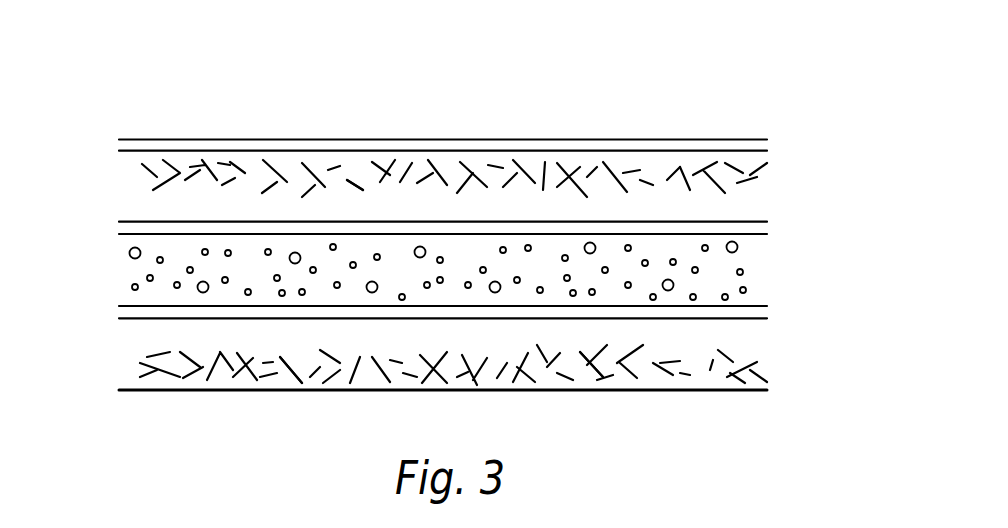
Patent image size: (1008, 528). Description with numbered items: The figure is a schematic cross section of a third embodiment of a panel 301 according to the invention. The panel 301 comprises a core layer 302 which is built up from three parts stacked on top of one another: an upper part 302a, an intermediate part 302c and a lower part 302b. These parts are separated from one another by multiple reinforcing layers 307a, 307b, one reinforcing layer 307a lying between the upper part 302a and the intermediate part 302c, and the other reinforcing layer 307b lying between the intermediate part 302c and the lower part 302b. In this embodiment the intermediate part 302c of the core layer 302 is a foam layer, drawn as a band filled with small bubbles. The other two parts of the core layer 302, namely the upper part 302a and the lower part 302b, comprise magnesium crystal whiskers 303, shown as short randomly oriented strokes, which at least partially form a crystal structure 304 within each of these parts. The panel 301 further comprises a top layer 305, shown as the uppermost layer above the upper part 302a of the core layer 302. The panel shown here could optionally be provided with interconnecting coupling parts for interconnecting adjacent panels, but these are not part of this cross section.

The panel 301 is at (117, 107).
The core layer 302 is at (762, 270).
The upper part 302a is at (668, 177).
The lower part 302b is at (587, 370).
The intermediate part 302c is at (682, 277).
The magnesium crystal whiskers 303 is at (357, 177).
The crystal structure 304 is at (128, 176).
The top layer 305 is at (760, 147).
The reinforcing layer 307a is at (760, 230).
The reinforcing layer 307b is at (760, 311).